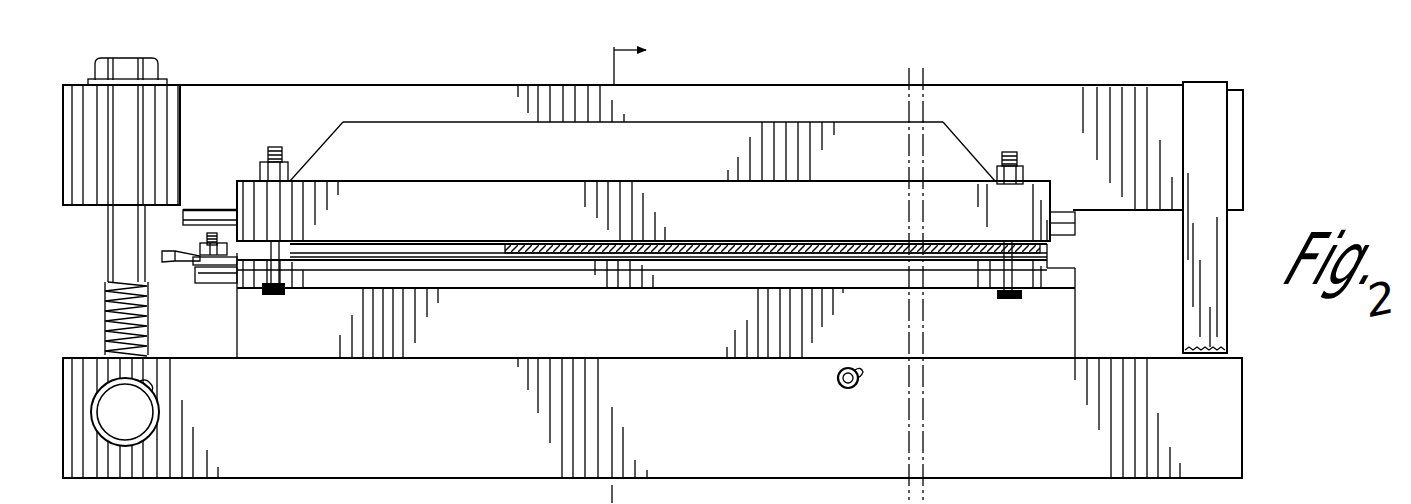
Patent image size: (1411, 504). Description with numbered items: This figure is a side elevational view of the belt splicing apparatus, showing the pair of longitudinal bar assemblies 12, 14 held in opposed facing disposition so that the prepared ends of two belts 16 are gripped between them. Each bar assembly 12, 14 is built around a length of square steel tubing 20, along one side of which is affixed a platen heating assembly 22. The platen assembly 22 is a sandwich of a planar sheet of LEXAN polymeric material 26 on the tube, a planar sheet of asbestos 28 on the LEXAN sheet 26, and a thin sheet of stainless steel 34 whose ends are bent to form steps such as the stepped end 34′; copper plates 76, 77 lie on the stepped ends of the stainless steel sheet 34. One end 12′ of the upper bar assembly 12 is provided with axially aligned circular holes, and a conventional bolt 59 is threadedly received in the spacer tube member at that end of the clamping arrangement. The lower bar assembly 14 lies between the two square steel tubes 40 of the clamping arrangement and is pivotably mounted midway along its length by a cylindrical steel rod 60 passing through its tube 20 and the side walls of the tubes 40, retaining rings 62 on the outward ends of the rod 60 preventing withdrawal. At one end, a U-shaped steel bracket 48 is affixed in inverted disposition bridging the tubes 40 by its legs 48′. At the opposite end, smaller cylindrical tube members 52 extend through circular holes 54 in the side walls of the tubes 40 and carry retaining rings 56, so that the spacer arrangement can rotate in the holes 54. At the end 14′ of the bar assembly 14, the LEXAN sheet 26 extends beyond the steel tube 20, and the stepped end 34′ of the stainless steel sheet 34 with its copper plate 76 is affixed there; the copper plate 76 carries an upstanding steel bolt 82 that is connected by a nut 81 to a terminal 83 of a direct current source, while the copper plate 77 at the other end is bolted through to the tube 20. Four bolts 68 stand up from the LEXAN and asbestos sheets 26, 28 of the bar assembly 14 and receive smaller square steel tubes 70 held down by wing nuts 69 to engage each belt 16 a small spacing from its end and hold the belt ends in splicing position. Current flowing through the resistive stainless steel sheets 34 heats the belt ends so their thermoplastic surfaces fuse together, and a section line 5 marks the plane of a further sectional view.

The section line 5- 5 is at (640, 274).
The bar assembly 12 is at (1091, 90).
The end of the bar assembly 12′ is at (86, 207).
The bar assembly 14 is at (657, 353).
The end of the bar assembly 14′ is at (253, 323).
The belt 16 is at (505, 246).
The square steel tubing 20 is at (564, 331).
The platen heating assembly 22 is at (960, 266).
The sheet of LEXAN polymeric material 26 is at (333, 280).
The sheet of asbestos 28 is at (361, 285).
The stainless steel sheet 34 is at (696, 257).
The stepped end of the stainless steel sheet 34′ is at (1072, 274).
The square steel tube 40 is at (1234, 421).
The U-shaped steel bracket 48 is at (1224, 307).
The legs of the bracket 48′ is at (1218, 150).
The cylindrical steel tube member 52 is at (140, 412).
The circular holes 54 is at (90, 398).
The retaining ring 56 is at (154, 431).
The bolt 59 is at (124, 235).
The cylindrical steel rod 60 is at (837, 387).
The retaining ring 62 is at (855, 390).
The bolt 68 is at (263, 232).
The wing nut 69 is at (271, 176).
The longitudinal square steel tube 70 is at (878, 333).
The copper plate 76 is at (212, 222).
The copper plate 77 is at (1077, 228).
The nut 81 is at (221, 258).
The steel bolt 82 is at (206, 237).
The terminal of the electrical source 83 is at (200, 256).